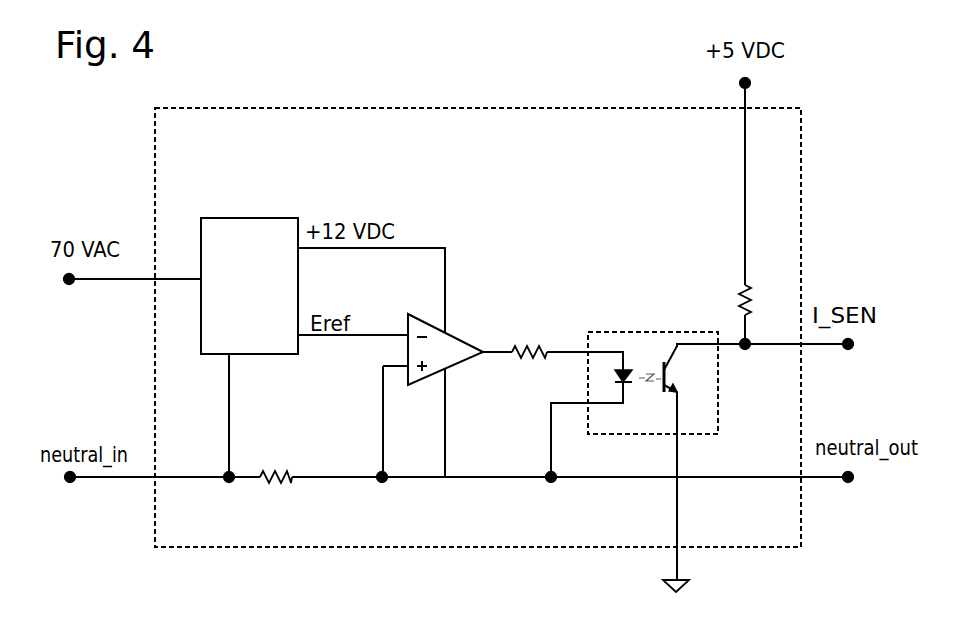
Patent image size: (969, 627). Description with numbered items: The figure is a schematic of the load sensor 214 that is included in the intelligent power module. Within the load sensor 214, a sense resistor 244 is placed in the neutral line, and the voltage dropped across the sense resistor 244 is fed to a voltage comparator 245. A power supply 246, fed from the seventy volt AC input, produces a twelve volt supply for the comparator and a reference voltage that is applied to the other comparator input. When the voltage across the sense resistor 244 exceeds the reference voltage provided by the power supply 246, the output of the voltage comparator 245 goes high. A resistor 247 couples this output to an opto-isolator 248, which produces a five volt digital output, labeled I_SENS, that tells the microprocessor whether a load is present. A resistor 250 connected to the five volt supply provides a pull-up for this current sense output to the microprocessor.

The load sensor 214 is at (352, 107).
The sense resistor 244 is at (265, 472).
The voltage comparator 245 is at (463, 338).
The power supply 246 is at (225, 218).
The resistor 247 is at (545, 347).
The opto-isolator 248 is at (683, 330).
The resistor 250 is at (740, 300).